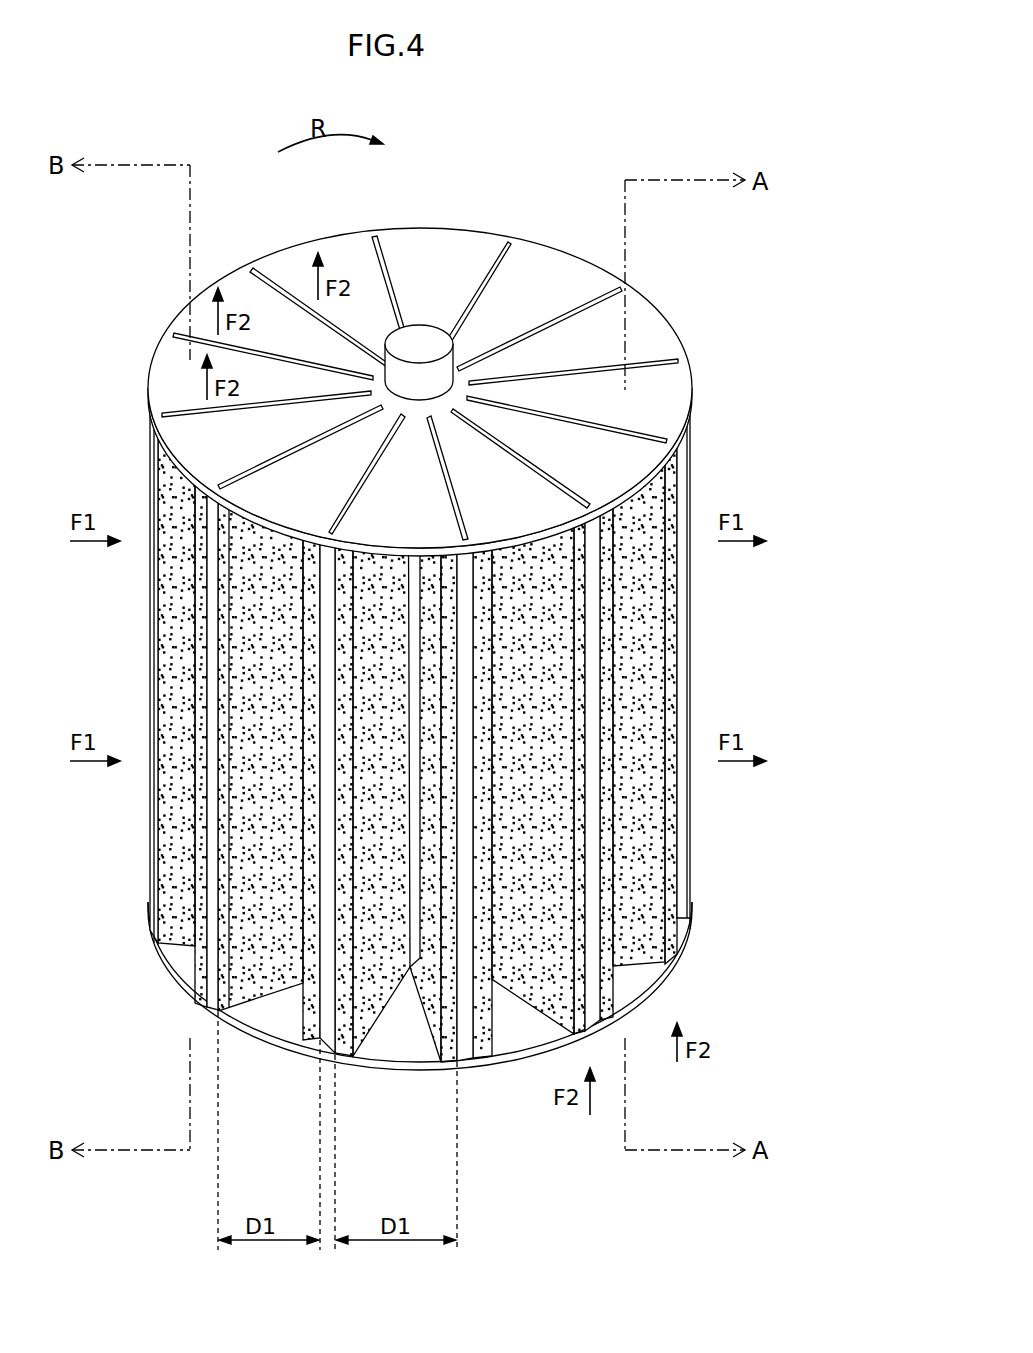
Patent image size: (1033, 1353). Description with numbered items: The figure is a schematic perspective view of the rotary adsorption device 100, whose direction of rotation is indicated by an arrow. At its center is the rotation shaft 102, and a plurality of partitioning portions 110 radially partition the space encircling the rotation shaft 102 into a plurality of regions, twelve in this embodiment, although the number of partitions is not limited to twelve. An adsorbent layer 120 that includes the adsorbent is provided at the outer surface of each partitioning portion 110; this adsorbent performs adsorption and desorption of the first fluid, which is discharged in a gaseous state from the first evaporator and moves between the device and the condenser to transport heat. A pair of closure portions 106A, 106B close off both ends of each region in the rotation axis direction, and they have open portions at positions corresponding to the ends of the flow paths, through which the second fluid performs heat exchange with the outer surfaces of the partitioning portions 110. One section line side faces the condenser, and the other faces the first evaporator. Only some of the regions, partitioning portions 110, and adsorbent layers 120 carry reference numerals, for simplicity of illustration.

The rotary adsorption device 100 is at (660, 112).
The rotation shaft 102 is at (420, 338).
The closure portion 106A is at (640, 332).
The closure portion 106B is at (653, 996).
The partitioning portion 110 is at (330, 1032).
The adsorbent layer 120 is at (308, 1028).